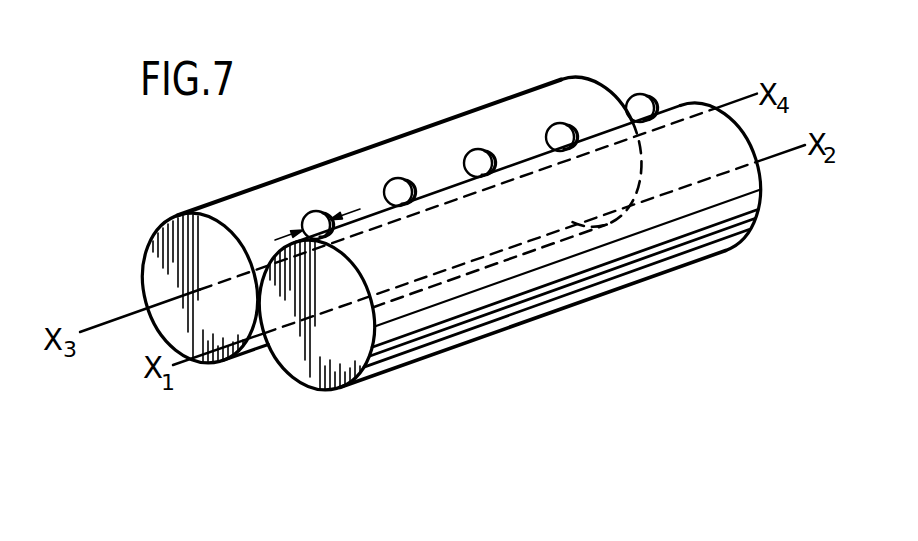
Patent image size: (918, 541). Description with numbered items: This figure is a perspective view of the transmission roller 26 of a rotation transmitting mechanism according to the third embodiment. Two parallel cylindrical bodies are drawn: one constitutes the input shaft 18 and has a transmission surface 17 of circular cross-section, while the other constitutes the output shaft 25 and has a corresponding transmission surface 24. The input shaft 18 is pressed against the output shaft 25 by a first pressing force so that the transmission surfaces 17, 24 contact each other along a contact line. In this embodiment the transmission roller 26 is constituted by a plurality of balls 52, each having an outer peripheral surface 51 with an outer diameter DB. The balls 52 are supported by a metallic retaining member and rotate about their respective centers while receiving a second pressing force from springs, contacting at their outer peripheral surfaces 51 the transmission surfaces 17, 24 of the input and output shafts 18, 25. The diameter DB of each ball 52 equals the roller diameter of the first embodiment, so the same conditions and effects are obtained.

The transmission surface 17 is at (489, 294).
The input shaft 18 is at (387, 371).
The transmission surface 24 is at (357, 188).
The output shaft 25 is at (175, 209).
The transmission roller 26 is at (414, 186).
The outer peripheral surfaces 51 is at (302, 221).
The balls 52 is at (317, 211).
The outer diameter DB is at (323, 213).